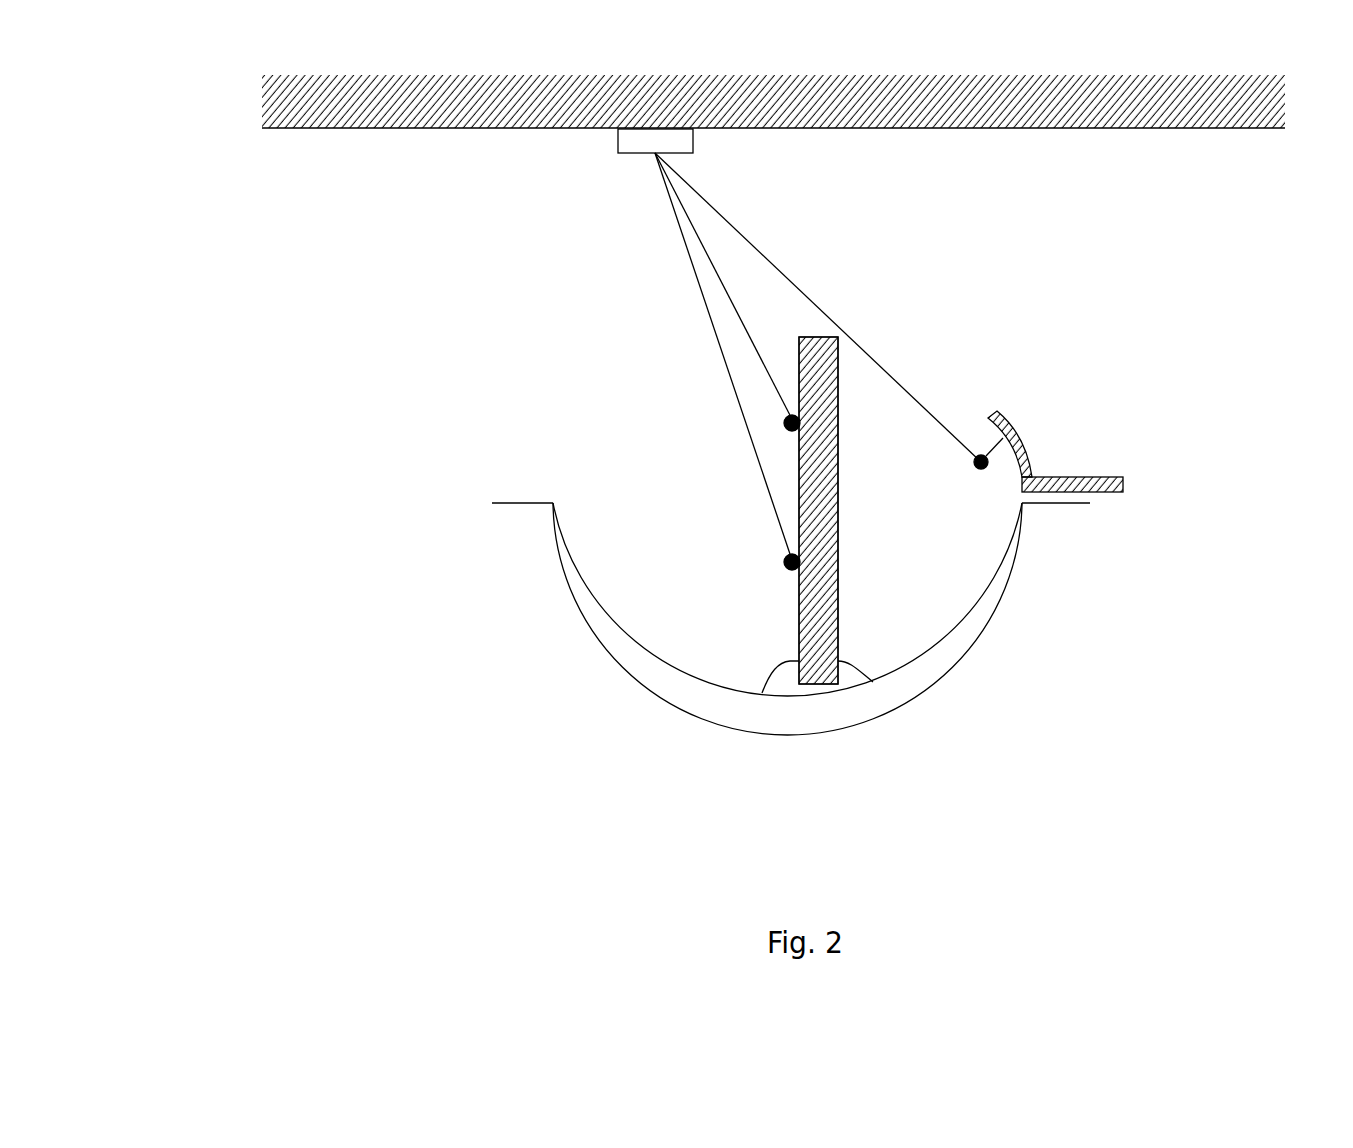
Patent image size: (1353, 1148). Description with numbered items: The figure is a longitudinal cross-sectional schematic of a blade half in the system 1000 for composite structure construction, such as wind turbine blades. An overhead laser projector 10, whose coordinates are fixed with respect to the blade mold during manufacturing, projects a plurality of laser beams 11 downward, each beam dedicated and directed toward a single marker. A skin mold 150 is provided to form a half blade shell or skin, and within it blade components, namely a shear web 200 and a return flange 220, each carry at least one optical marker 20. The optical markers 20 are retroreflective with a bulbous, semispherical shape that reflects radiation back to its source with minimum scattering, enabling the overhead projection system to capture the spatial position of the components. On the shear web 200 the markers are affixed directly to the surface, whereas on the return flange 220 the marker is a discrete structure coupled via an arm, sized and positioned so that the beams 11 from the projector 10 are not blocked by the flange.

The system 1000 is at (196, 147).
The overhead laser projector 10 is at (612, 150).
The laser beams 11 is at (818, 356).
The optical markers 20 is at (975, 463).
The shear web 200 is at (795, 610).
The skin mold 150 is at (942, 687).
The return flange 220 is at (1105, 500).